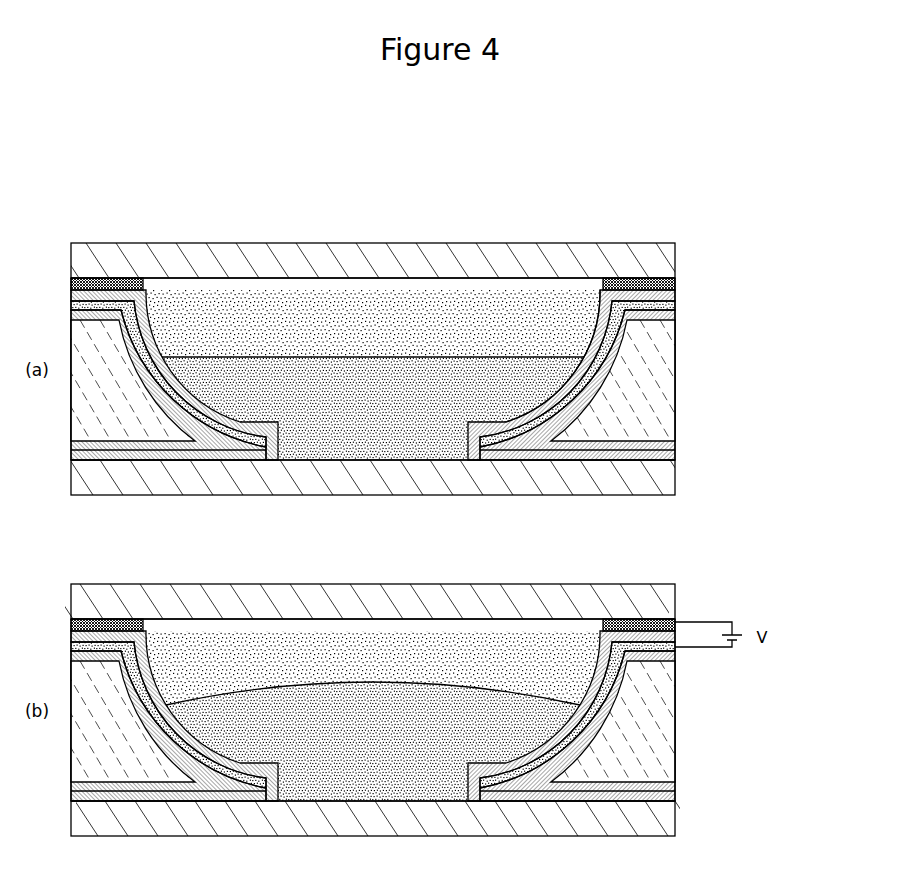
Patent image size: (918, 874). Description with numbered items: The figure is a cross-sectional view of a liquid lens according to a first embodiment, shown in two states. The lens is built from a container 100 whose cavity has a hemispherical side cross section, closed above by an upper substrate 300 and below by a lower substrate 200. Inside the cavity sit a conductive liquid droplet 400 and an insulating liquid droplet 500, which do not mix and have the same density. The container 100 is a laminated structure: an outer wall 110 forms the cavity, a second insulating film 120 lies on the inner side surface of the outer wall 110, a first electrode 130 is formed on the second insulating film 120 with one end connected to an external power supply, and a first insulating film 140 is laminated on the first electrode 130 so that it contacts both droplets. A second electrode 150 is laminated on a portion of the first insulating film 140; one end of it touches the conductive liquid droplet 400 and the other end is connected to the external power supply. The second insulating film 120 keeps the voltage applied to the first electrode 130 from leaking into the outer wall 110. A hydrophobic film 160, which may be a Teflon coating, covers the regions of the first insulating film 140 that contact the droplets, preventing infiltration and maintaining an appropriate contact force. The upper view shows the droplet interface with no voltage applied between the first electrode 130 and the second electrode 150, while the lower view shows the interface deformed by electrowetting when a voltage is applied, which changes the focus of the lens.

The container 100 is at (800, 274).
The outer wall 110 is at (663, 421).
The second insulating film 120 is at (627, 365).
The first electrode 130 is at (675, 305).
The first insulating film 140 is at (675, 294).
The second electrode 150 is at (675, 286).
The hydrophobic film 160 is at (597, 342).
The lower substrate 200 is at (663, 473).
The upper substrate 300 is at (618, 262).
The conductive liquid droplet 400 is at (221, 310).
The insulating liquid droplet 500 is at (317, 385).